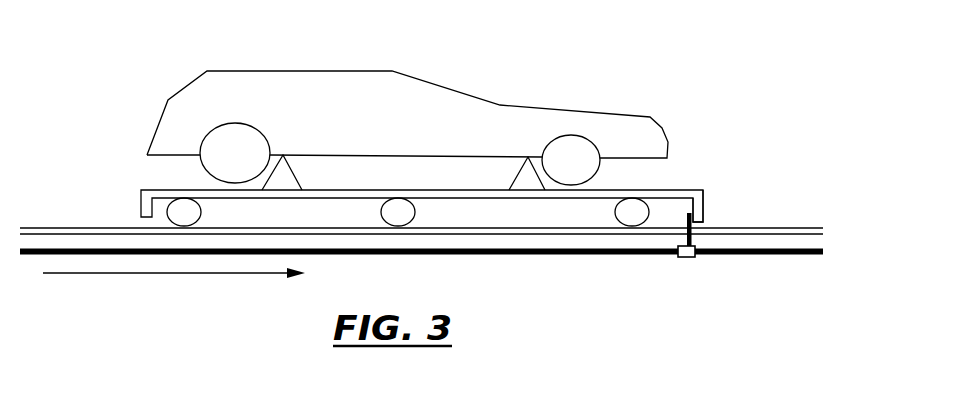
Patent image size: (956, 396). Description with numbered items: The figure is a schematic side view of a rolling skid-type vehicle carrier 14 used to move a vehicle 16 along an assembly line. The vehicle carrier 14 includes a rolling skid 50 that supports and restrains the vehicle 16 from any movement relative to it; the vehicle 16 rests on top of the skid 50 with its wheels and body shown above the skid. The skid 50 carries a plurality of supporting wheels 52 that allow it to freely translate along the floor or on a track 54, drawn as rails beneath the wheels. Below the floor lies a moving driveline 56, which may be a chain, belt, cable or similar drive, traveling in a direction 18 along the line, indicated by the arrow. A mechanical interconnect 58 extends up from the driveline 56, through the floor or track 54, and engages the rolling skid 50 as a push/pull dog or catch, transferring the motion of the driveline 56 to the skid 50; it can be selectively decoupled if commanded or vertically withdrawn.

The vehicle carrier 14 is at (122, 189).
The vehicle 16 is at (667, 130).
The direction 18 is at (220, 273).
The rolling skid 50 is at (705, 200).
The supporting wheels 52 is at (415, 212).
The track 54 is at (797, 228).
The moving driveline 56 is at (572, 255).
The mechanical interconnect 58 is at (695, 243).